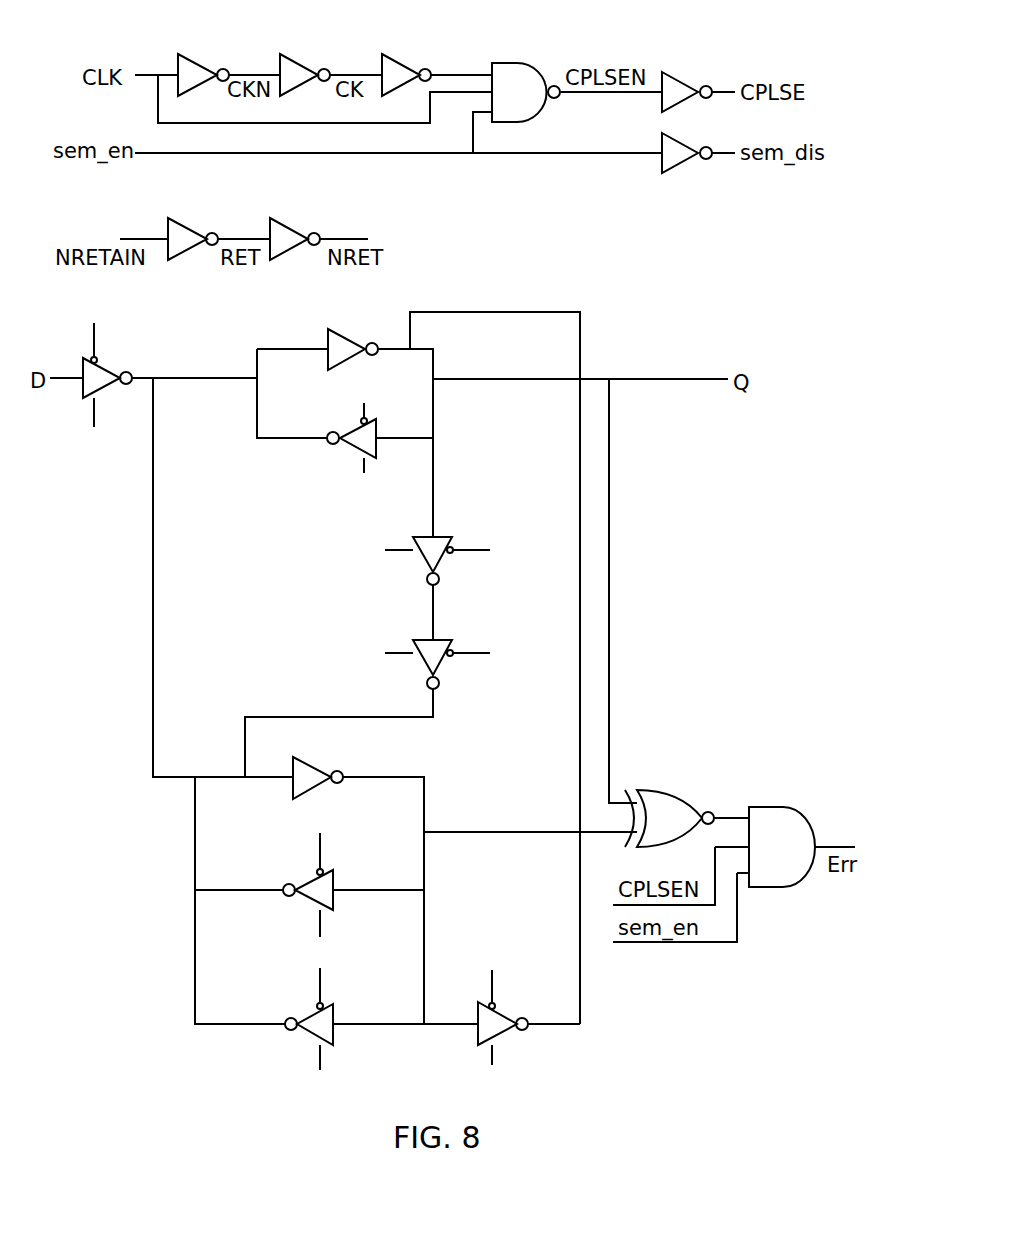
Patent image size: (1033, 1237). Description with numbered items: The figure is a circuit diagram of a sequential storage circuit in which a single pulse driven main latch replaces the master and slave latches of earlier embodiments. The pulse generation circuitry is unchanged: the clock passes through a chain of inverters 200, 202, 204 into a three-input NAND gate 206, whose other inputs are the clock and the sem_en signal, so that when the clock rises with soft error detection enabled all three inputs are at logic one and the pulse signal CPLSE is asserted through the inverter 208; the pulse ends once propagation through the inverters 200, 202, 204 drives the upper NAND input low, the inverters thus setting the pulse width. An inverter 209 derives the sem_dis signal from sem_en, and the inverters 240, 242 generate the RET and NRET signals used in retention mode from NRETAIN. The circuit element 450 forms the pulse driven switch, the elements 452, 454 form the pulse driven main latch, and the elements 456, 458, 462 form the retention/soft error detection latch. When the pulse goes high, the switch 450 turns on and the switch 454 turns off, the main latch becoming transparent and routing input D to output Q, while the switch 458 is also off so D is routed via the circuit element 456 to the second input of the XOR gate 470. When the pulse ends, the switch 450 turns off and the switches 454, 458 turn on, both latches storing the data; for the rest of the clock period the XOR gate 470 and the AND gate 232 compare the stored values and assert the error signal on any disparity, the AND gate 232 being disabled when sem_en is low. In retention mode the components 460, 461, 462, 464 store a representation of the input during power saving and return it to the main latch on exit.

The inverter 200 is at (213, 46).
The inverter 202 is at (313, 46).
The inverter 204 is at (418, 46).
The NAND gate 206 is at (517, 63).
The inverter 208 is at (681, 78).
The inverter 209 is at (681, 168).
The inverter 240 is at (205, 210).
The inverter 242 is at (305, 210).
The pulse driven switch 450 is at (108, 366).
The inverter 452 is at (366, 320).
The switch 454 is at (352, 448).
The circuit element 456 is at (312, 766).
The switch 458 is at (337, 878).
The retention mode component 460 is at (418, 560).
The retention mode component 461 is at (440, 665).
The retention mode component 462 is at (337, 1012).
The retention mode component 464 is at (505, 1036).
The XOR gate 470 is at (665, 790).
The AND gate 232 is at (780, 806).